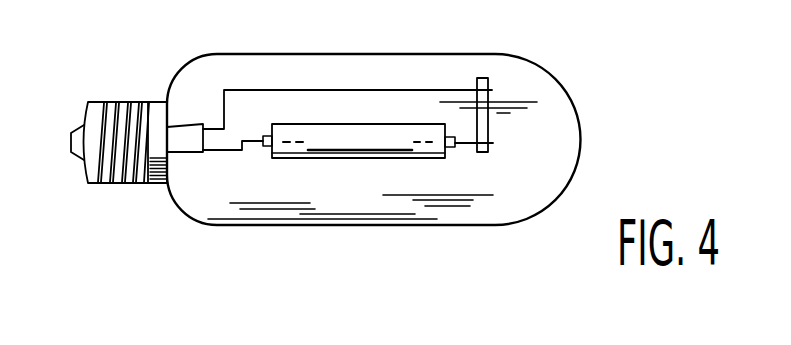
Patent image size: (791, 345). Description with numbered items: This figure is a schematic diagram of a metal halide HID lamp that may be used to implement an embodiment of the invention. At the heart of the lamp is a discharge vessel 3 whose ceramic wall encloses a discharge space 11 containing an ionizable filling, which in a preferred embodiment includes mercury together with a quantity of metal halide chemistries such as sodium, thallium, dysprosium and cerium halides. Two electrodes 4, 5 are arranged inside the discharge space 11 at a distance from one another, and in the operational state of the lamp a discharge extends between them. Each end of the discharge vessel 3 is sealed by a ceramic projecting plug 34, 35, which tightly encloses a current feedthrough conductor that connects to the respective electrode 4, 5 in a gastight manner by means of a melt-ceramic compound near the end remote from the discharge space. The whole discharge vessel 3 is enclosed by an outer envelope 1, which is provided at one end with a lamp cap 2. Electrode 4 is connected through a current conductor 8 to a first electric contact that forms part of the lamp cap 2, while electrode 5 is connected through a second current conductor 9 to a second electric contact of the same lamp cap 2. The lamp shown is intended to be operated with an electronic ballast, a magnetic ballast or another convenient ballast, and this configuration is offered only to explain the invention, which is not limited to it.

The outer envelope 1 is at (578, 133).
The lamp cap 2 is at (120, 184).
The discharge vessel 3 is at (368, 163).
The electrode 4 is at (282, 165).
The electrode 5 is at (423, 164).
The current conductor 8 is at (217, 154).
The current conductor 9 is at (402, 90).
The discharge space 11 is at (347, 132).
The ceramic projecting plug 34 is at (266, 134).
The ceramic projecting plug 35 is at (458, 118).